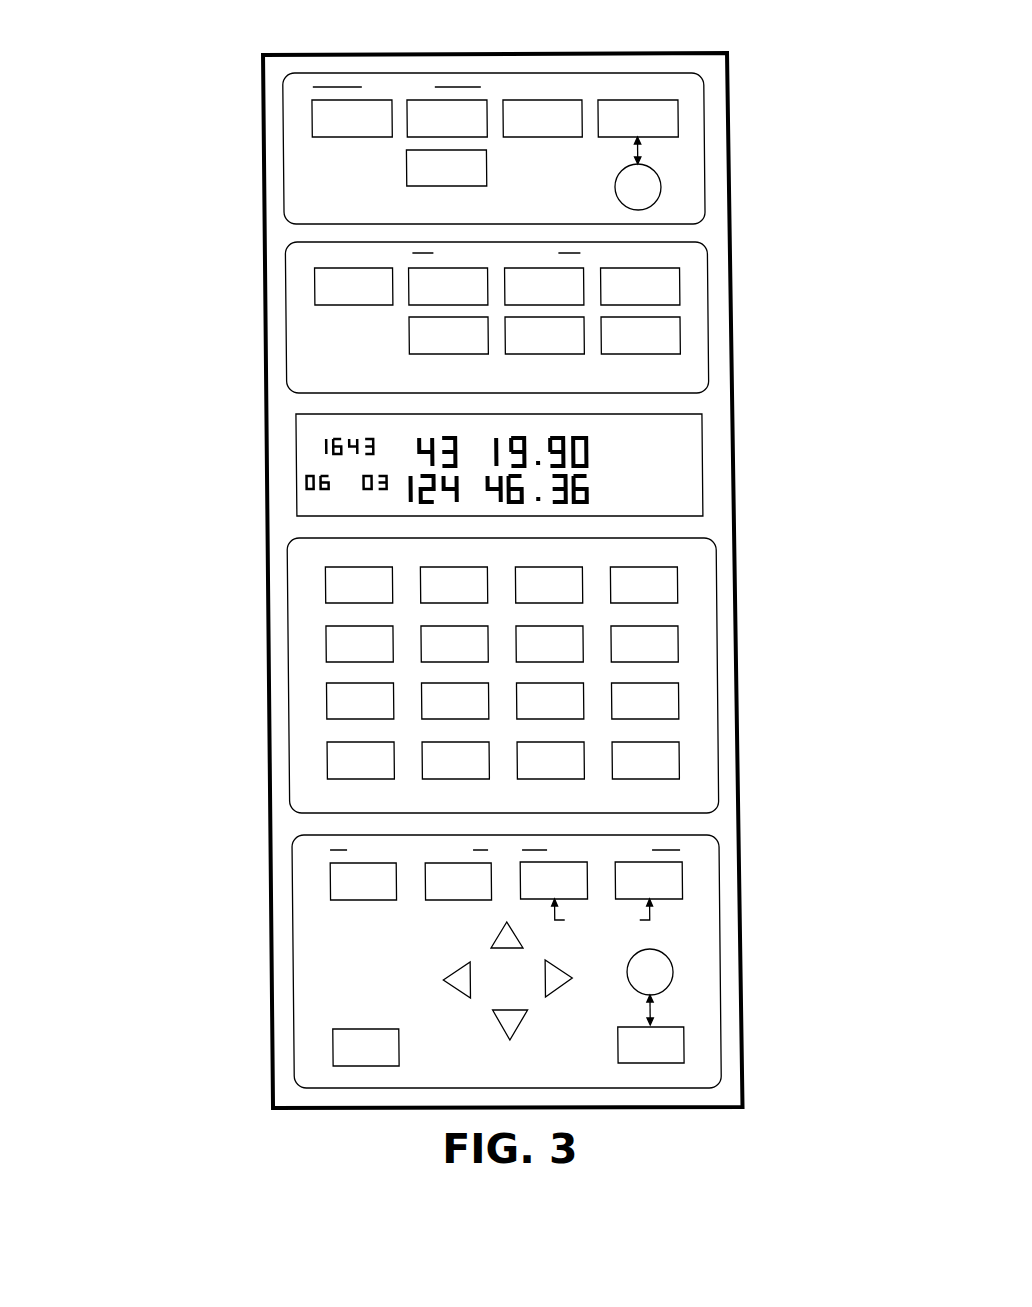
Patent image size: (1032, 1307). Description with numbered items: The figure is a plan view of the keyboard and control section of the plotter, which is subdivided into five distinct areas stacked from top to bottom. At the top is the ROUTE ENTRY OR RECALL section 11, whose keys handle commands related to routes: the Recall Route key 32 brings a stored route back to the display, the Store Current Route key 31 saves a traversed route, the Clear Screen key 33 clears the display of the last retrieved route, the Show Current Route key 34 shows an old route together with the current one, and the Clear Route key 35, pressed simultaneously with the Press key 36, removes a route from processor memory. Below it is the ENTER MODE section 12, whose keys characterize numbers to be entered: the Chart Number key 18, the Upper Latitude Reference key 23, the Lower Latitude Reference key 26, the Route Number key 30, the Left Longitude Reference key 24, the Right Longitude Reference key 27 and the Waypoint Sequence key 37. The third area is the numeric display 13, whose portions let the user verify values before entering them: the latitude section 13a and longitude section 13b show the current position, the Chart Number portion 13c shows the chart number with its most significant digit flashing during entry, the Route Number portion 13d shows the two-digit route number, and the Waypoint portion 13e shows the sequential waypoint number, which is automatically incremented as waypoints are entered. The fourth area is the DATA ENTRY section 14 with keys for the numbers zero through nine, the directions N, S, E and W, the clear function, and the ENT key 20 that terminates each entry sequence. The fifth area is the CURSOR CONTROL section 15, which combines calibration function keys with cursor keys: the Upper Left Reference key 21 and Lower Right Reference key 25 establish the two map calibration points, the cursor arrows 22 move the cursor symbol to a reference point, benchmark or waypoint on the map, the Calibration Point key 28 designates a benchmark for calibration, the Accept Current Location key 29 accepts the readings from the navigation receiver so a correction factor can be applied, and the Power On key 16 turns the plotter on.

The ROUTE ENTRY OR RECALL section 11 is at (539, 117).
The ENTER MODE section 12 is at (495, 311).
The numeric display 13 is at (499, 487).
The latitude section of the numeric display 13a is at (592, 435).
The longitude section of the numeric display 13b is at (591, 507).
The Chart Number portion of the numeric display 13c is at (318, 443).
The Route Number portion of the numeric display 13d is at (293, 480).
The Waypoint portion of the numeric display 13e is at (353, 485).
The DATA ENTRY section 14 is at (556, 675).
The CURSOR CONTROL section 15 is at (563, 945).
The Power On key 16 is at (356, 1028).
The Chart Number key 18 is at (312, 283).
The ENT key 20 is at (578, 777).
The Upper Left Reference key 21 is at (356, 902).
The cursor arrows 22 is at (449, 967).
The Upper Latitude Reference key 23 is at (407, 306).
The Left Longitude Reference key 24 is at (410, 340).
The Lower Right Reference key 25 is at (415, 883).
The Lower Latitude Reference key 26 is at (571, 268).
The Right Longitude Reference key 27 is at (566, 353).
The Calibration Point (CAL POINT) key 28 is at (580, 870).
The Accept Current Location key 29 is at (675, 881).
The Route Number key 30 is at (677, 283).
The Store Current Route key 31 is at (489, 100).
The Recall Route key 32 is at (311, 122).
The Clear Screen key 33 is at (544, 137).
The Show Current Route key 34 is at (405, 168).
The Clear Route key 35 is at (677, 115).
The Press key 36 is at (659, 187).
The Waypoint Sequence key 37 is at (677, 335).